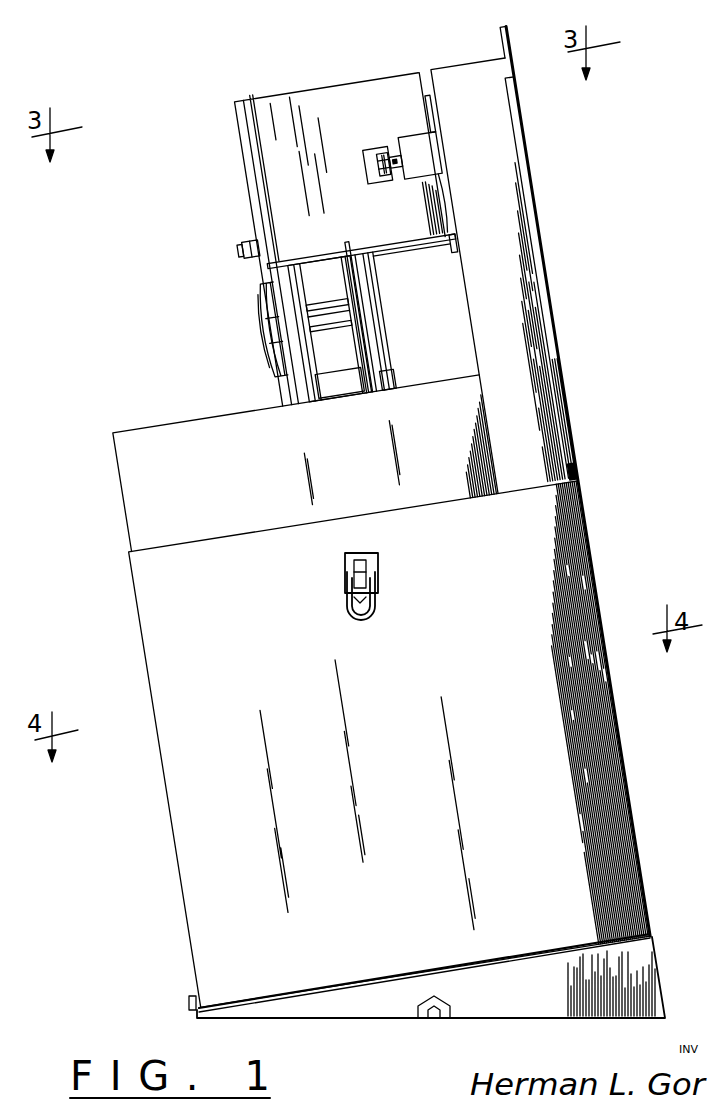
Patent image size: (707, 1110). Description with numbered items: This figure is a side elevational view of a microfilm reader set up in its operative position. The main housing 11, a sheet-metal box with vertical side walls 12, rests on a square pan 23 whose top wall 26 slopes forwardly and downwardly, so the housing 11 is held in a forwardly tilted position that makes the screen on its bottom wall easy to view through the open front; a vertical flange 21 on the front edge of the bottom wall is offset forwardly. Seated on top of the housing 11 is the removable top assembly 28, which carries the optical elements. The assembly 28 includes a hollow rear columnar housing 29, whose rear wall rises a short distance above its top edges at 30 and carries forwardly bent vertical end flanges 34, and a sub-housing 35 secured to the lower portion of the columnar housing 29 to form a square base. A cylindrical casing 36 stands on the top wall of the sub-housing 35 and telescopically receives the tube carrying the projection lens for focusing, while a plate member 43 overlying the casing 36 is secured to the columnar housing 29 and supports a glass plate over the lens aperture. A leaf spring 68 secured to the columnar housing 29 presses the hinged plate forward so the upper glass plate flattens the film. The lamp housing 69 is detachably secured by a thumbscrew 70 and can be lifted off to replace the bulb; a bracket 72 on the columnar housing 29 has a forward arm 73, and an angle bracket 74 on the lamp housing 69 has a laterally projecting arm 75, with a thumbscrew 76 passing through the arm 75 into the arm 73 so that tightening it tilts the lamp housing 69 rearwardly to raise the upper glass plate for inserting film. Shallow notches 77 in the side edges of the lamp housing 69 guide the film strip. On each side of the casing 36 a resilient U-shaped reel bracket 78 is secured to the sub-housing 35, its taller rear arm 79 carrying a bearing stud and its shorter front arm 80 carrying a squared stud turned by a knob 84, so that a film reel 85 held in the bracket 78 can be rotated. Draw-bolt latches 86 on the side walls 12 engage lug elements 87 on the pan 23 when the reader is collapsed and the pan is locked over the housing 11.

The housing 11 is at (636, 782).
The side walls 12 is at (622, 897).
The vertical flange 21 is at (190, 1000).
The square pan 23 is at (663, 982).
The top wall 26 is at (401, 975).
The top assembly 28 is at (549, 283).
The rear columnar housing 29 is at (505, 240).
The top end of rear wall 30 is at (503, 33).
The vertical end flanges 34 is at (554, 380).
The sub-housing 35 is at (148, 430).
The cylindrical casing 36 is at (377, 357).
The plate member 43 is at (425, 247).
The leaf spring 68 is at (431, 130).
The housing 69 is at (254, 134).
The thumbscrew 70 is at (244, 250).
The bracket 72 is at (417, 138).
The forward arm 73 is at (401, 148).
The angle bracket 74 is at (368, 152).
The laterally projecting arm 75 is at (397, 180).
The thumbscrew 76 is at (383, 160).
The notches 77 is at (302, 260).
The reel bracket 78 is at (389, 377).
The rear arm 79 is at (356, 268).
The front arm 80 is at (313, 392).
The knob 84 is at (260, 295).
The film reel 85 is at (312, 306).
The latches 86 is at (380, 583).
The lug elements 87 is at (437, 1018).